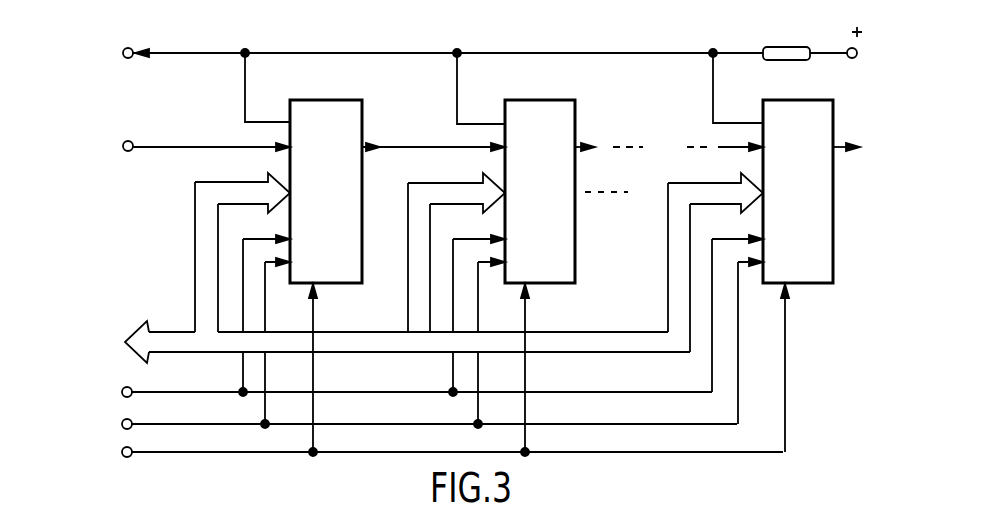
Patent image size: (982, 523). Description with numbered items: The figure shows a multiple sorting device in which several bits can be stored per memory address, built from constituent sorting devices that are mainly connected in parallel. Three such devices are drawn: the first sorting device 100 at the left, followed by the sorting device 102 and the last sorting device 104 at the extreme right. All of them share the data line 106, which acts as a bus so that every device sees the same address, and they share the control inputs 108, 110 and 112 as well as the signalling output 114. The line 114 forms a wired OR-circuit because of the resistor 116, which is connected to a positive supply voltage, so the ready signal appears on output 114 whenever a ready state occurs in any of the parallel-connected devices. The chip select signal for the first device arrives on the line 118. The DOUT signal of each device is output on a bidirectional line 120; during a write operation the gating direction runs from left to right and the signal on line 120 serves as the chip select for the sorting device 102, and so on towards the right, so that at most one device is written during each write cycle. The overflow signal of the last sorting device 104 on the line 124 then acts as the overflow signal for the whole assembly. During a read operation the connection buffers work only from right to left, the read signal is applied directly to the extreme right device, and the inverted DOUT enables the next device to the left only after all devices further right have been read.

The first sorting device 100 is at (335, 284).
The second sorting device 102 is at (553, 284).
The last sorting device 104 is at (813, 284).
The data line 106 is at (128, 330).
The control input 108 is at (131, 388).
The control input 110 is at (131, 420).
The control input 112 is at (131, 448).
The signalling output 114 is at (132, 57).
The resistor 116 is at (788, 46).
The chip select line 118 is at (213, 143).
The bidirectional line 120 is at (397, 143).
The overflow line 124 is at (858, 143).